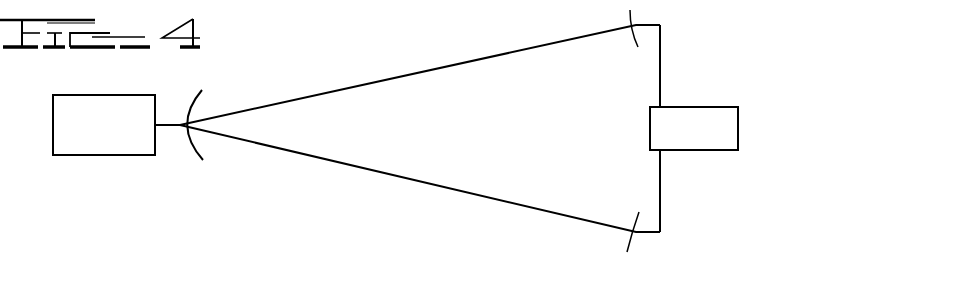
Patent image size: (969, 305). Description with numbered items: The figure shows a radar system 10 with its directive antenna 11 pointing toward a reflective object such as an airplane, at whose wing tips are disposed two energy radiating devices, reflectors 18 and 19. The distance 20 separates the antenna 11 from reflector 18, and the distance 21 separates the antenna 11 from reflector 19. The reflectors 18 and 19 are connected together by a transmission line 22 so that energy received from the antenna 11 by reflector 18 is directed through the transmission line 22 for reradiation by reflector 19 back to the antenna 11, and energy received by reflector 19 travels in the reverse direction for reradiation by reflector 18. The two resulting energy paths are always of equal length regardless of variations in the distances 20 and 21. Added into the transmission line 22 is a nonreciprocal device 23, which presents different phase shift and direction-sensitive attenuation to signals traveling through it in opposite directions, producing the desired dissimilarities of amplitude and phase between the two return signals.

The radar system 10 is at (83, 93).
The directive antenna 11 is at (183, 107).
The reflector 18 is at (639, 24).
The reflector 19 is at (638, 240).
The distance 20 is at (430, 67).
The distance 21 is at (426, 185).
The transmission line 22 is at (661, 73).
The nonreciprocal device 23 is at (698, 107).